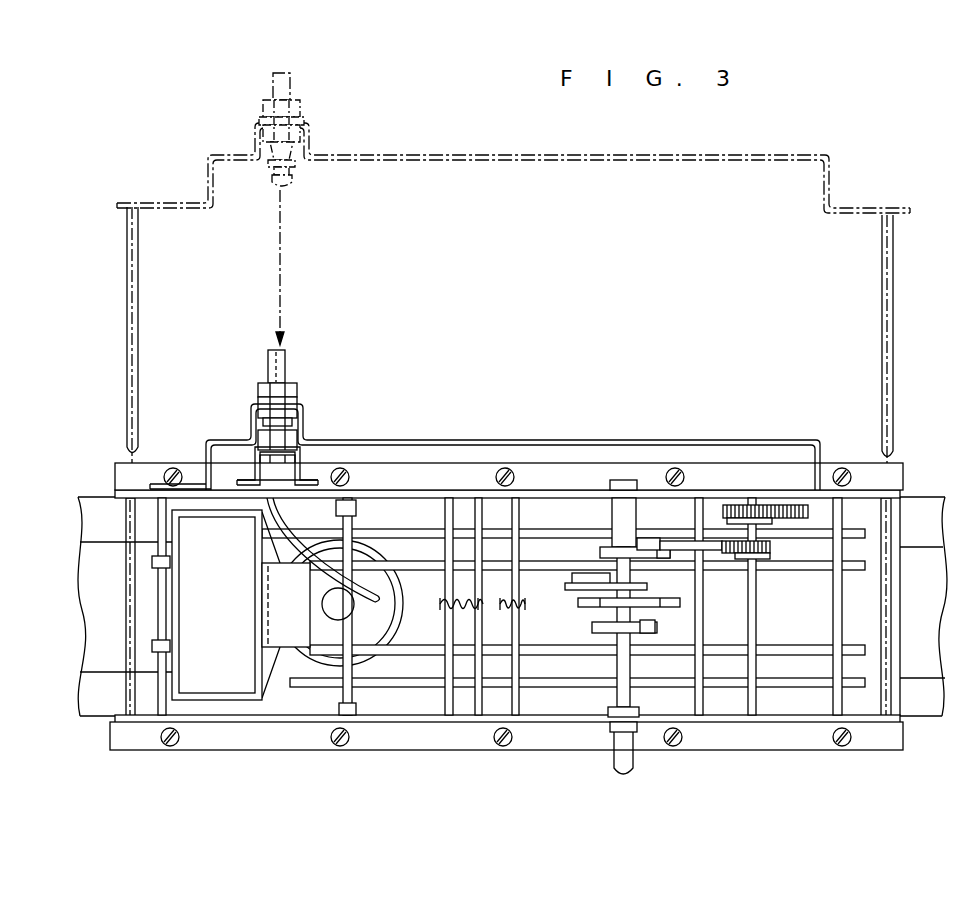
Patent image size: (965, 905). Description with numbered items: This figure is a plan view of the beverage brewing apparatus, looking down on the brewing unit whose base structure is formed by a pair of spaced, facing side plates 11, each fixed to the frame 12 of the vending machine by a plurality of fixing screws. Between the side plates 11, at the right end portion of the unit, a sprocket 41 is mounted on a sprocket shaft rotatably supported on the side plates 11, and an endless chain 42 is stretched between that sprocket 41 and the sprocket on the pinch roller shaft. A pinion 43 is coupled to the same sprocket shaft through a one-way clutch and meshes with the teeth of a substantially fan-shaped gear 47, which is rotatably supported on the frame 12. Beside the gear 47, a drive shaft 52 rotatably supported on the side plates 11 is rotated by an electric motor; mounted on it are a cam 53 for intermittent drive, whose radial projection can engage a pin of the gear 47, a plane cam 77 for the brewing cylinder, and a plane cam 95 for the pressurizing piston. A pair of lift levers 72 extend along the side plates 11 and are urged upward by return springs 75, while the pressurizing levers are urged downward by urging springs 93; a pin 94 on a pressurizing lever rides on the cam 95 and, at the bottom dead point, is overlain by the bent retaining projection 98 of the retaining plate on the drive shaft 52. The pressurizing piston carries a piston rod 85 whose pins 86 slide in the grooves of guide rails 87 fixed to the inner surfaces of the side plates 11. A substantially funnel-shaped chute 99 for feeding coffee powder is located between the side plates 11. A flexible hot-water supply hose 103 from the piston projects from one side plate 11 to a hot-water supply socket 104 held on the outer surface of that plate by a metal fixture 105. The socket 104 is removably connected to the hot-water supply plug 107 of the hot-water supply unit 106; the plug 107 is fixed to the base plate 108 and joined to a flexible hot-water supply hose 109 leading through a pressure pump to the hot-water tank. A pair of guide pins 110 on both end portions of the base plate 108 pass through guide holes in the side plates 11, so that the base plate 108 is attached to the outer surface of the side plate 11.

The side plates 11 is at (560, 490).
The frame 12 is at (514, 776).
The sprocket 41 is at (770, 505).
The endless chain 42 is at (808, 505).
The pinion 43 is at (768, 553).
The fan-shaped gear 47 is at (716, 547).
The drive shaft 52 is at (633, 765).
The cam for intermittent drive 53 is at (640, 543).
The lift levers 72 is at (405, 530).
The return spring 75 is at (440, 603).
The plane cam 77 is at (577, 602).
The piston rod 85 is at (352, 612).
The pins 86 is at (349, 520).
The guide rails 87 is at (355, 497).
The urging spring 93 is at (506, 612).
The pin 94 is at (607, 557).
The plane cam 95 is at (650, 630).
The retaining projection 98 is at (571, 577).
The chute 99 is at (217, 688).
The hot-water supply hose 103 is at (297, 513).
The hot-water supply socket 104 is at (258, 457).
The metal fixture 105 is at (302, 460).
The hot-water supply unit 106 is at (441, 430).
The hot-water supply plug 107 is at (262, 136).
The base plate 108 is at (746, 157).
The hot-water supply hose 109 is at (292, 79).
The guide pins 110 is at (130, 349).